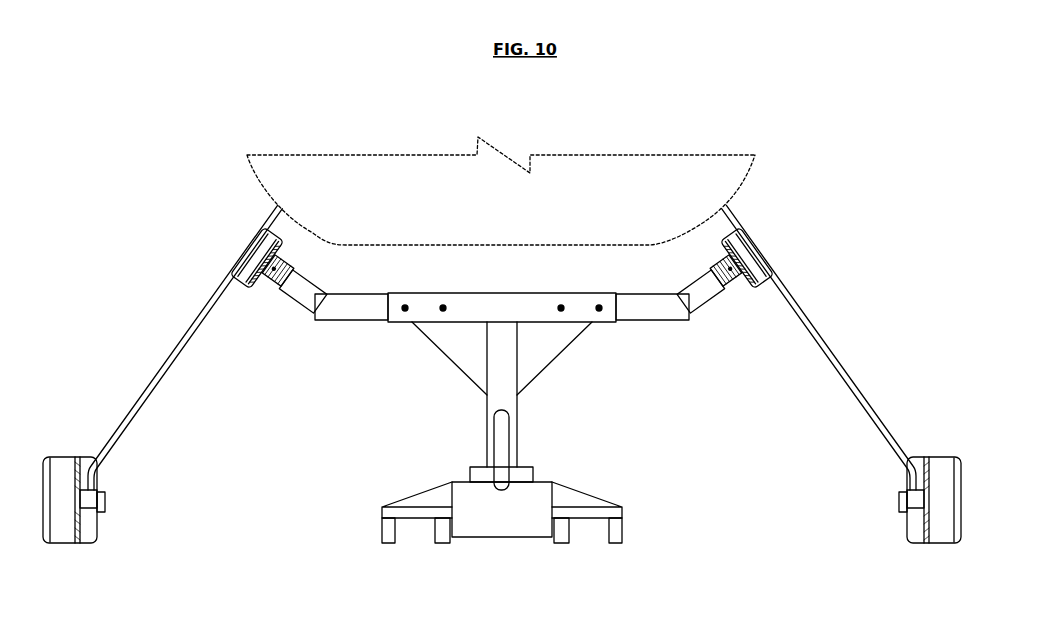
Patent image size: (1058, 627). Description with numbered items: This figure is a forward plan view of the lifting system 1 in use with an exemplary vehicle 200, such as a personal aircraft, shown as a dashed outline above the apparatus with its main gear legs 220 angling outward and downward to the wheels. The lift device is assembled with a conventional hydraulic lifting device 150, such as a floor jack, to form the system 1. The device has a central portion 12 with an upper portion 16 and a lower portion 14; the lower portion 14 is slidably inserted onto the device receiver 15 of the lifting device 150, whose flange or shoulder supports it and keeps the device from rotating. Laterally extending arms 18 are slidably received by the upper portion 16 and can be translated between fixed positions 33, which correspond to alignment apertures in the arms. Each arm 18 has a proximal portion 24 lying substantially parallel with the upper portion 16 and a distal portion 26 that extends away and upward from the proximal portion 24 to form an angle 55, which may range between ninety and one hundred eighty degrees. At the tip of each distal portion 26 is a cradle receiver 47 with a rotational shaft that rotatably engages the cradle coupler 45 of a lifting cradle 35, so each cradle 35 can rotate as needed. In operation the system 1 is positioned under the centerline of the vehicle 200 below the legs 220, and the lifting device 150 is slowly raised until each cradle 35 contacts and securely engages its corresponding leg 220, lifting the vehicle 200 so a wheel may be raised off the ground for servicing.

The system of lifting a vehicle 1 is at (305, 483).
The central portion 12 is at (555, 374).
The lower portion 14 is at (500, 393).
The device receiver 15 is at (470, 467).
The upper portion 16 is at (505, 300).
The laterally extending arm 18 is at (306, 323).
The proximal portion 24 is at (337, 311).
The distal portion 26 is at (288, 308).
The fixed position 33 is at (443, 304).
The lifting cradle 35 is at (258, 233).
The cradle coupler 45 is at (285, 262).
The cradle receiver 47 is at (270, 284).
The angle 55 is at (318, 290).
The hydraulic lifting device 150 is at (574, 497).
The vehicle 200 is at (575, 178).
The main gear leg 220 is at (183, 343).